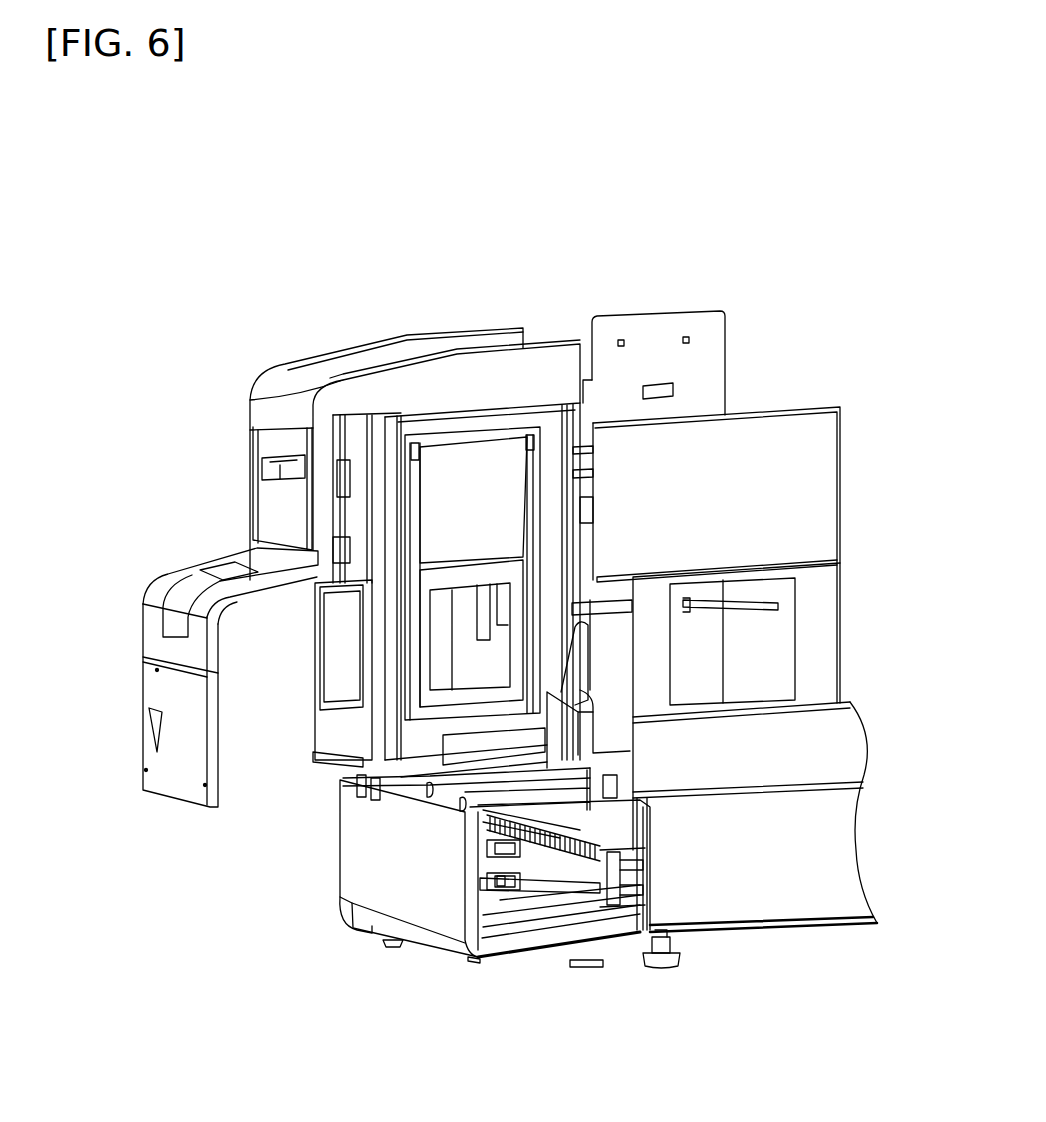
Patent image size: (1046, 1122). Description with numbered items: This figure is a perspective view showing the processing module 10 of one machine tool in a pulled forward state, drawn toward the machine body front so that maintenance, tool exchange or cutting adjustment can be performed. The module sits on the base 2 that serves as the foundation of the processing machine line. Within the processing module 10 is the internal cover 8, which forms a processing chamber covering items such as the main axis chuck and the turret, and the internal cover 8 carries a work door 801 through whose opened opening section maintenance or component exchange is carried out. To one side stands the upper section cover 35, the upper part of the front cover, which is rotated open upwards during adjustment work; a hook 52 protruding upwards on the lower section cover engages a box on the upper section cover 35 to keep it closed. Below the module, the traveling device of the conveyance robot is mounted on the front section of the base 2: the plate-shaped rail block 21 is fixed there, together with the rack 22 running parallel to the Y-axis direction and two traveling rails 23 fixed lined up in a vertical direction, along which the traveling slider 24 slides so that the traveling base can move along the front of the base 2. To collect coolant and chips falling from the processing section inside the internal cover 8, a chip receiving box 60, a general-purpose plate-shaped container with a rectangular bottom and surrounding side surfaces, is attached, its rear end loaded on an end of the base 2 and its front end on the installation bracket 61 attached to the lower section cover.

The base 2 is at (787, 868).
The internal cover 8 is at (337, 722).
The processing module 10 is at (758, 367).
The rail block 21 is at (637, 937).
The rack 22 is at (650, 868).
The traveling rails 23 is at (560, 917).
The traveling slider 24 is at (497, 880).
The upper section cover 35 is at (175, 768).
The hook 52 is at (443, 780).
The chip receiving box 60 is at (480, 777).
The installation bracket 61 is at (380, 795).
The work door 801 is at (465, 472).